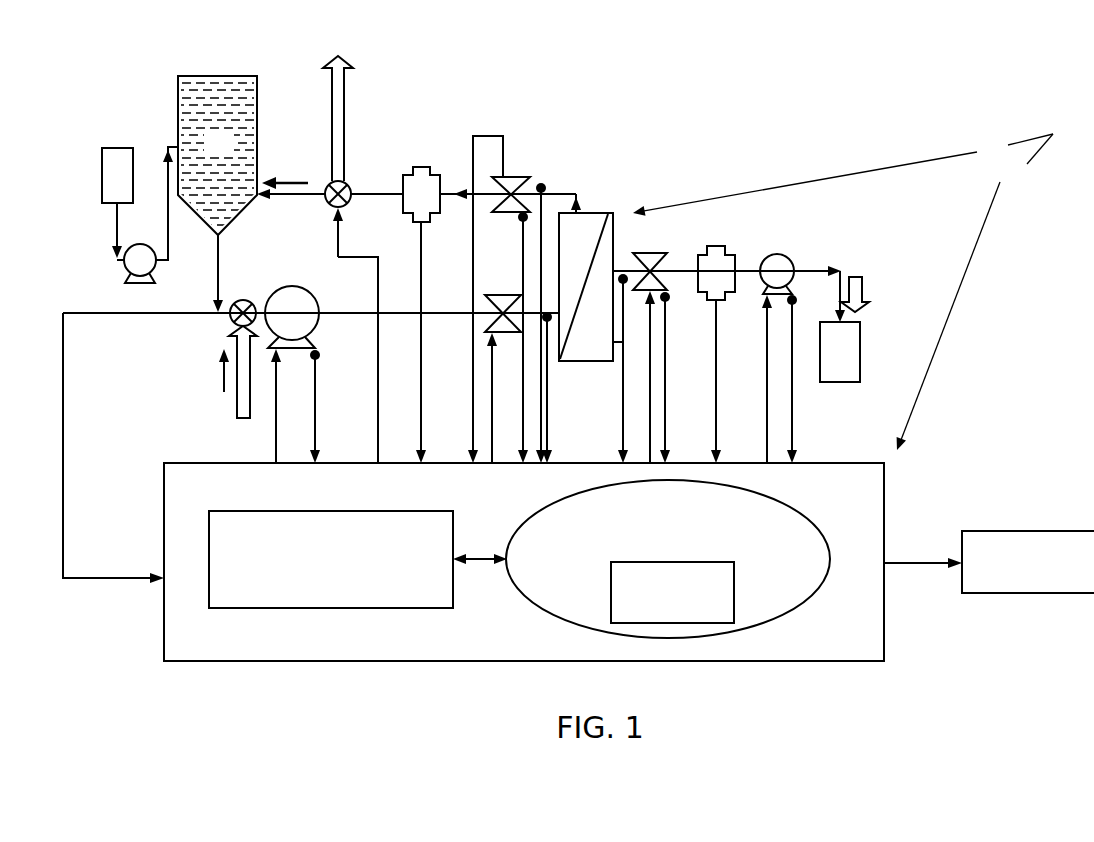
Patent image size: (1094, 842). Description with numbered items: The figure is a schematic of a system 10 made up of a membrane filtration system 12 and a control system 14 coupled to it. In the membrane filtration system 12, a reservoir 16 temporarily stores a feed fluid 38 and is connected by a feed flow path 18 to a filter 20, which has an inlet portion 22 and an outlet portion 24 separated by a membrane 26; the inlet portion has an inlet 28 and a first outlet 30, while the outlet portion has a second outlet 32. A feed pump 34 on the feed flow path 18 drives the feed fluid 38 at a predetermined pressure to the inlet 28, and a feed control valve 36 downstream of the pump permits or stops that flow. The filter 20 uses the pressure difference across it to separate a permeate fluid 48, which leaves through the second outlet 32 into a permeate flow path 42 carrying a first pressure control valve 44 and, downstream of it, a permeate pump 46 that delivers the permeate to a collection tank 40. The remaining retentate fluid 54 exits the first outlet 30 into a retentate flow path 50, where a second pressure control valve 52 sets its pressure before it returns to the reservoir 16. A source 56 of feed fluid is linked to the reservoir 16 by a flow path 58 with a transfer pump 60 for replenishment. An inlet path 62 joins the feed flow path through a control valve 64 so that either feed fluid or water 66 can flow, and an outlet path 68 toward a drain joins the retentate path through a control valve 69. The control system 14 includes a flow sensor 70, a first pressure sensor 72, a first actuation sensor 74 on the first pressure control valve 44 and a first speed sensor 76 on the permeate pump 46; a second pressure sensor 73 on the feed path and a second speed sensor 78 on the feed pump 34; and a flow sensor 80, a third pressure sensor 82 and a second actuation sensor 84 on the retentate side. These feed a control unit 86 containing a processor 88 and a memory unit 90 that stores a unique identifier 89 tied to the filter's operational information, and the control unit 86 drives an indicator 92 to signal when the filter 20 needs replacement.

The system 10 is at (1044, 142).
The membrane filtration system 12 is at (819, 177).
The control system 14 is at (959, 305).
The reservoir 16 is at (216, 176).
The feed flow path 18 is at (335, 313).
The filter 20 is at (599, 295).
The inlet portion 22 is at (566, 250).
The outlet portion 24 is at (581, 345).
The membrane 26 is at (583, 291).
The inlet 28 is at (563, 354).
The first outlet 30 is at (576, 214).
The second outlet 32 is at (617, 270).
The feed pump 34 is at (291, 286).
The feed control valve 36 is at (497, 295).
The feed fluid 38 is at (208, 150).
The collection tank 40 is at (861, 350).
The permeate flow path 42 is at (836, 268).
The first pressure control valve 44 is at (648, 253).
The permeate pump 46 is at (778, 255).
The permeate fluid 48 is at (869, 289).
The retentate flow path 50 is at (373, 193).
The second pressure control valve 52 is at (515, 177).
The retentate fluid 54 is at (296, 180).
The source 56 is at (113, 148).
The flow path 58 is at (116, 236).
The transfer pump 60 is at (142, 244).
The inlet path 62 is at (234, 350).
The control valve 64 is at (245, 300).
The water 66 is at (222, 380).
The outlet path 68 is at (346, 100).
The control valve 69 is at (326, 202).
The flow sensor 70 is at (716, 246).
The first pressure sensor 72 is at (625, 284).
The second pressure sensor 73 is at (549, 322).
The first actuation sensor 74 is at (669, 300).
The first speed sensor 76 is at (796, 298).
The second speed sensor 78 is at (319, 359).
The flow sensor 80 is at (422, 167).
The third pressure sensor 82 is at (546, 184).
The second actuation sensor 84 is at (520, 220).
The control unit 86 is at (448, 661).
The processor 88 is at (247, 511).
The unique identifier 89 is at (735, 590).
The memory unit 90 is at (668, 559).
The indicator 92 is at (1045, 531).